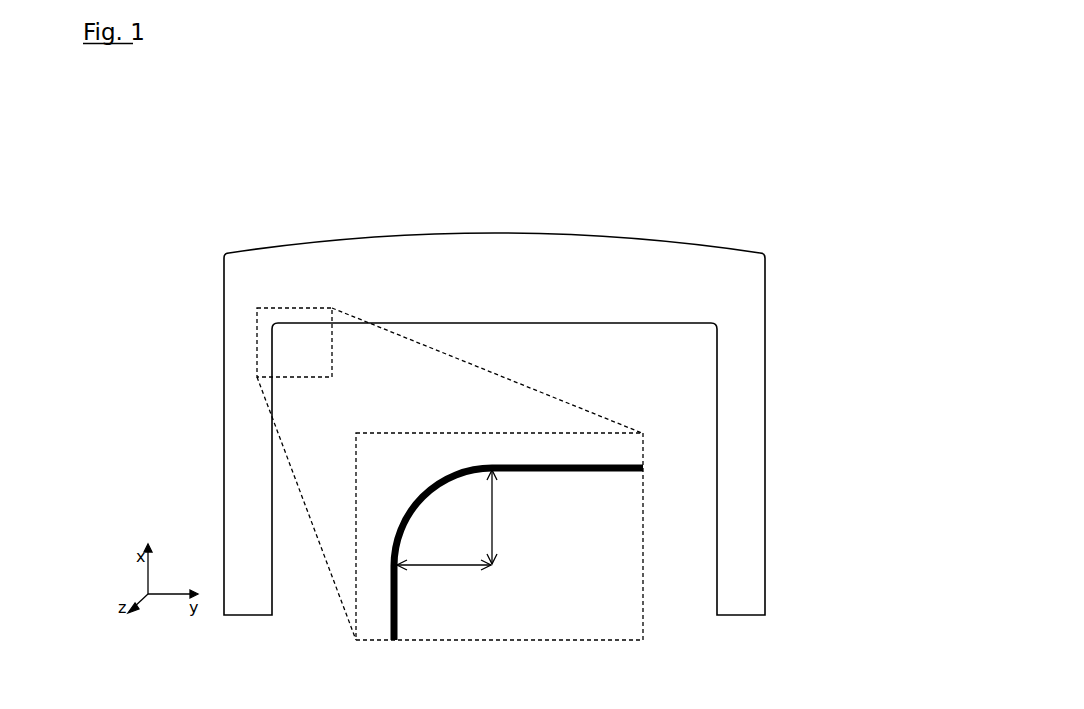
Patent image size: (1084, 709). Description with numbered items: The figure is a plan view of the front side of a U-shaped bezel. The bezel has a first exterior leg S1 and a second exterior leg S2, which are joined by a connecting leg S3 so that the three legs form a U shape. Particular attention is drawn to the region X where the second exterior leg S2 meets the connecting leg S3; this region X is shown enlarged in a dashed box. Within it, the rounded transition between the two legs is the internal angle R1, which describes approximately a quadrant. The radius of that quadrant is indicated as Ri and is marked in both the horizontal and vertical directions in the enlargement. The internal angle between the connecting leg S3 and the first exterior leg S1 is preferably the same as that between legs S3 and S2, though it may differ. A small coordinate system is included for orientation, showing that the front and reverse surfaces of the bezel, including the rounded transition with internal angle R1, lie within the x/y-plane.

The first exterior leg S1 is at (761, 537).
The second exterior leg S2 is at (230, 498).
The connecting leg S3 is at (447, 245).
The region of the internal angle X is at (268, 310).
The internal angle R1 is at (421, 507).
The radius of the rounded region of the internal angle Ri is at (458, 529).